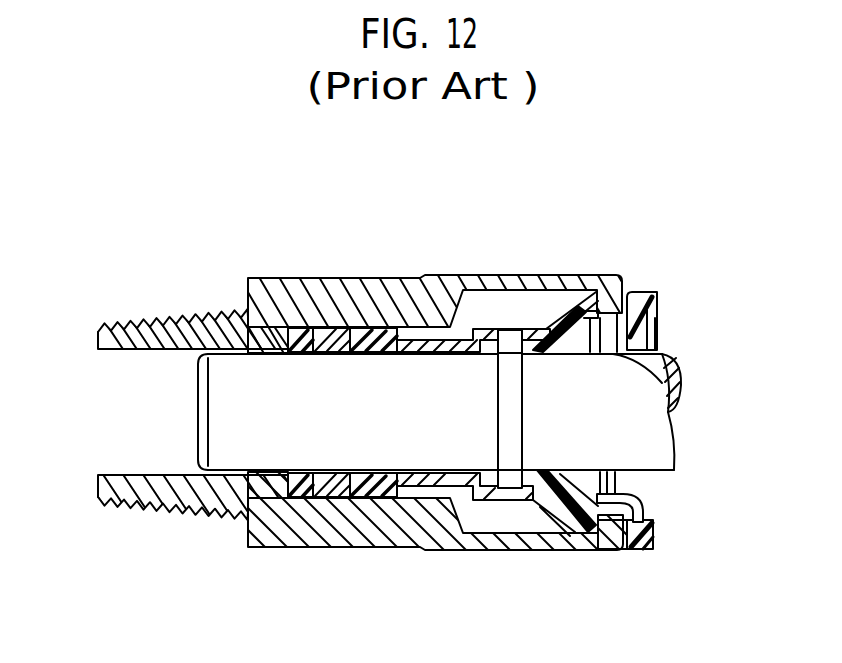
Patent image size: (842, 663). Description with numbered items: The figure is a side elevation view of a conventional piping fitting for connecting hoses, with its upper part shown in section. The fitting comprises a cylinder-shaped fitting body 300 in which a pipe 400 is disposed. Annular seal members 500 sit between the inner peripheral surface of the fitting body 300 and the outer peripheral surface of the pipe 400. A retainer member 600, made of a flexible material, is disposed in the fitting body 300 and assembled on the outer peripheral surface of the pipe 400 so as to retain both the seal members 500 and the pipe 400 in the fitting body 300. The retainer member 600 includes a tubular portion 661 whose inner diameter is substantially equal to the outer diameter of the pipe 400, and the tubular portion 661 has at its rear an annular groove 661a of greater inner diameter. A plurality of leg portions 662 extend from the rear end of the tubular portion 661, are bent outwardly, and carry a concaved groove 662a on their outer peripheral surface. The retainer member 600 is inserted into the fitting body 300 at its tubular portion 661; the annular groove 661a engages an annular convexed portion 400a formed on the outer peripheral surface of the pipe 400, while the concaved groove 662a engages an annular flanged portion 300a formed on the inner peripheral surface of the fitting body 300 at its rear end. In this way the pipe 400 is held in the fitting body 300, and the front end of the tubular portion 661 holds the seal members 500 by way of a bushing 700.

The fitting body 300 is at (395, 278).
The annular flanged portion 300a is at (622, 302).
The pipe 400 is at (665, 456).
The annular convexed portion 400a is at (496, 444).
The annular seal member 500 is at (355, 353).
The retainer member 600 is at (474, 356).
The tubular portion 661 is at (433, 352).
The annular groove 661a is at (514, 340).
The leg portion 662 is at (610, 316).
The concaved groove 662a is at (676, 391).
The bushing 700 is at (377, 355).